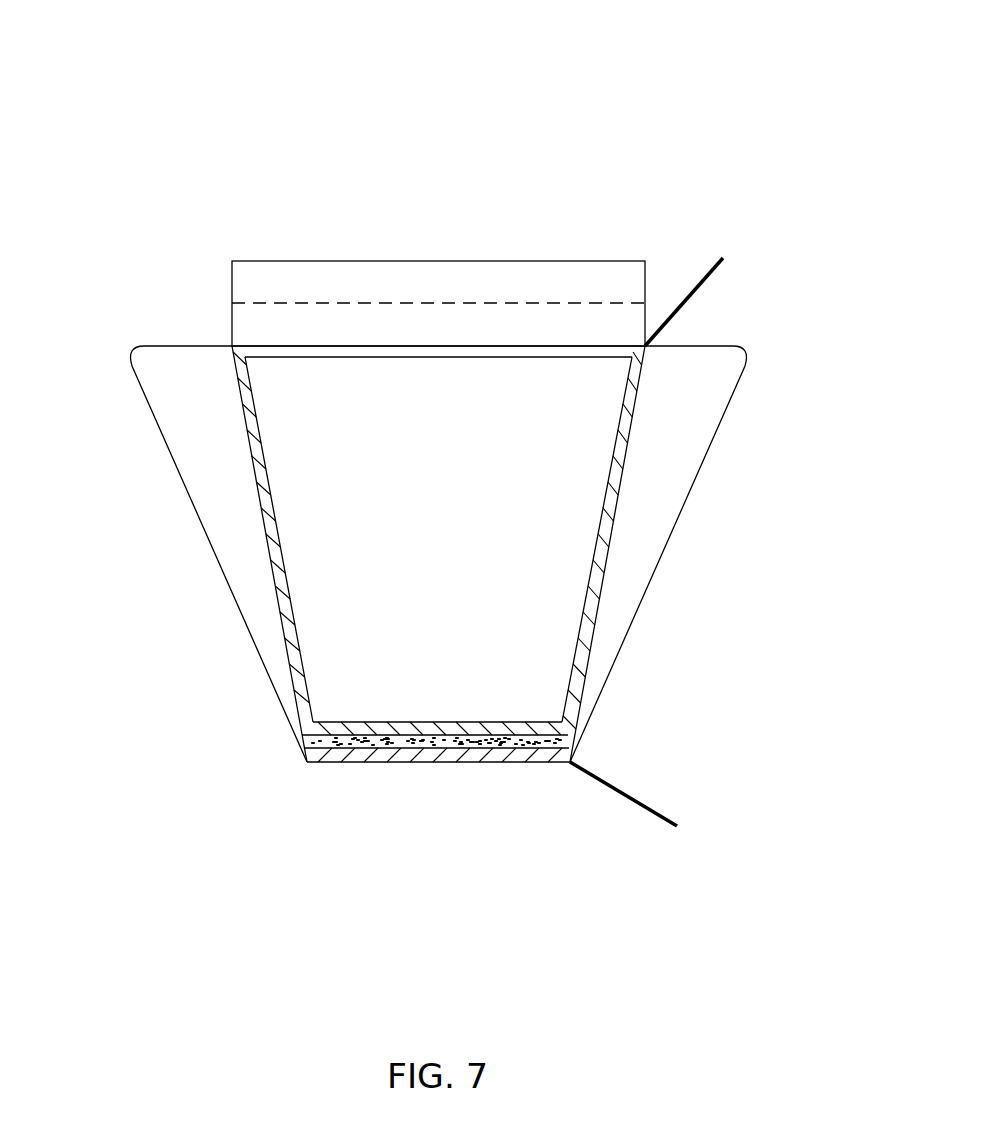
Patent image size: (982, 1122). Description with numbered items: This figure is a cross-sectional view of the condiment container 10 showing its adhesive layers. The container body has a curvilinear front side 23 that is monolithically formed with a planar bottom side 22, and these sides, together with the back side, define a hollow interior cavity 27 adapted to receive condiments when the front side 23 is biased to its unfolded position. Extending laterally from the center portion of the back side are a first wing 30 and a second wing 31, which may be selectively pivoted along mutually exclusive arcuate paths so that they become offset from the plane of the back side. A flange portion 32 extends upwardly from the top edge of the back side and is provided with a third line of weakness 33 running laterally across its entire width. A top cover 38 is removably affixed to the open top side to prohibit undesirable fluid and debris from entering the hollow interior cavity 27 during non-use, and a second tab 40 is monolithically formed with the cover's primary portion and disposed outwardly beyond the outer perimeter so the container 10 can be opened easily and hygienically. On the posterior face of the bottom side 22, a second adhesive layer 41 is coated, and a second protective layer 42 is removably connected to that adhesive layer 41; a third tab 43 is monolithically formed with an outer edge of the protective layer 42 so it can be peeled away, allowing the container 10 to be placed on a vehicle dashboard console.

The condiment container 10 is at (406, 84).
The bottom side 22 is at (362, 722).
The front side 23 is at (270, 513).
The hollow interior cavity 27 is at (466, 503).
The first wing 30 is at (182, 402).
The second wing 31 is at (690, 368).
The flange portion 32 is at (262, 281).
The third line of weakness 33 is at (393, 303).
The top cover 38 is at (505, 352).
The second tab 40 is at (693, 293).
The second adhesive layer 41 is at (567, 742).
The second protective layer 42 is at (410, 762).
The third tab 43 is at (662, 813).